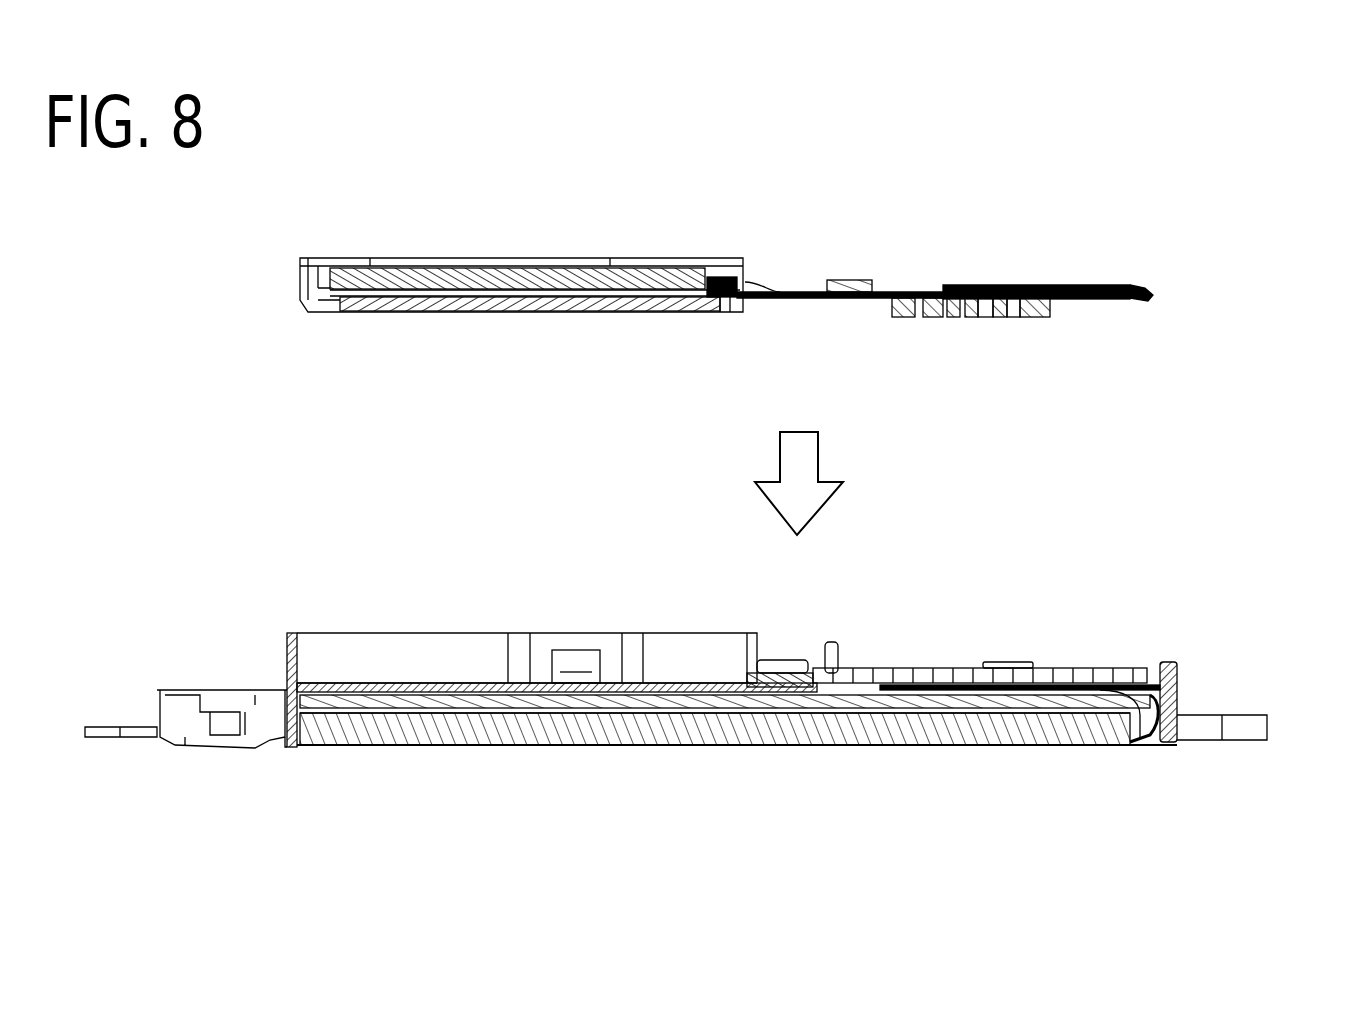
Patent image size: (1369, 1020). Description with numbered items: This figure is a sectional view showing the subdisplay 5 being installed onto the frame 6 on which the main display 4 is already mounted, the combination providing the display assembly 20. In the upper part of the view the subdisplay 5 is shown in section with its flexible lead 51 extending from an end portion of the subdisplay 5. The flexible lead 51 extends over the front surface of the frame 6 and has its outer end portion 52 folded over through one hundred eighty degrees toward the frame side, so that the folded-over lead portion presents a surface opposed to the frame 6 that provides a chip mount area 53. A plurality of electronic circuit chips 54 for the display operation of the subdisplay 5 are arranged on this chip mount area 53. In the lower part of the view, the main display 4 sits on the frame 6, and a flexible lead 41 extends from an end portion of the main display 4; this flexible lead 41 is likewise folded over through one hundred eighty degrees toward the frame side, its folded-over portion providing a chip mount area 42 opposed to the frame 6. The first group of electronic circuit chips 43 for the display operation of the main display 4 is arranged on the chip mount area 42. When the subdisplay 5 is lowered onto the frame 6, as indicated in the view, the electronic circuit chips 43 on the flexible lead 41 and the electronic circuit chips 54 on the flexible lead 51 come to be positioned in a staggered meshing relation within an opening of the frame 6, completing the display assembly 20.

The subdisplay 5 is at (520, 258).
The flexible lead 51 is at (1062, 287).
The outer end portion 52 is at (1152, 291).
The chip mount area 53 is at (1085, 300).
The electronic circuit chips 54 is at (972, 317).
The display assembly 20 is at (1240, 490).
The frame 6 is at (288, 655).
The electronic circuit chips 43 is at (955, 668).
The chip mount area 42 is at (1070, 668).
The main display 4 is at (705, 742).
The flexible lead 41 is at (1150, 745).